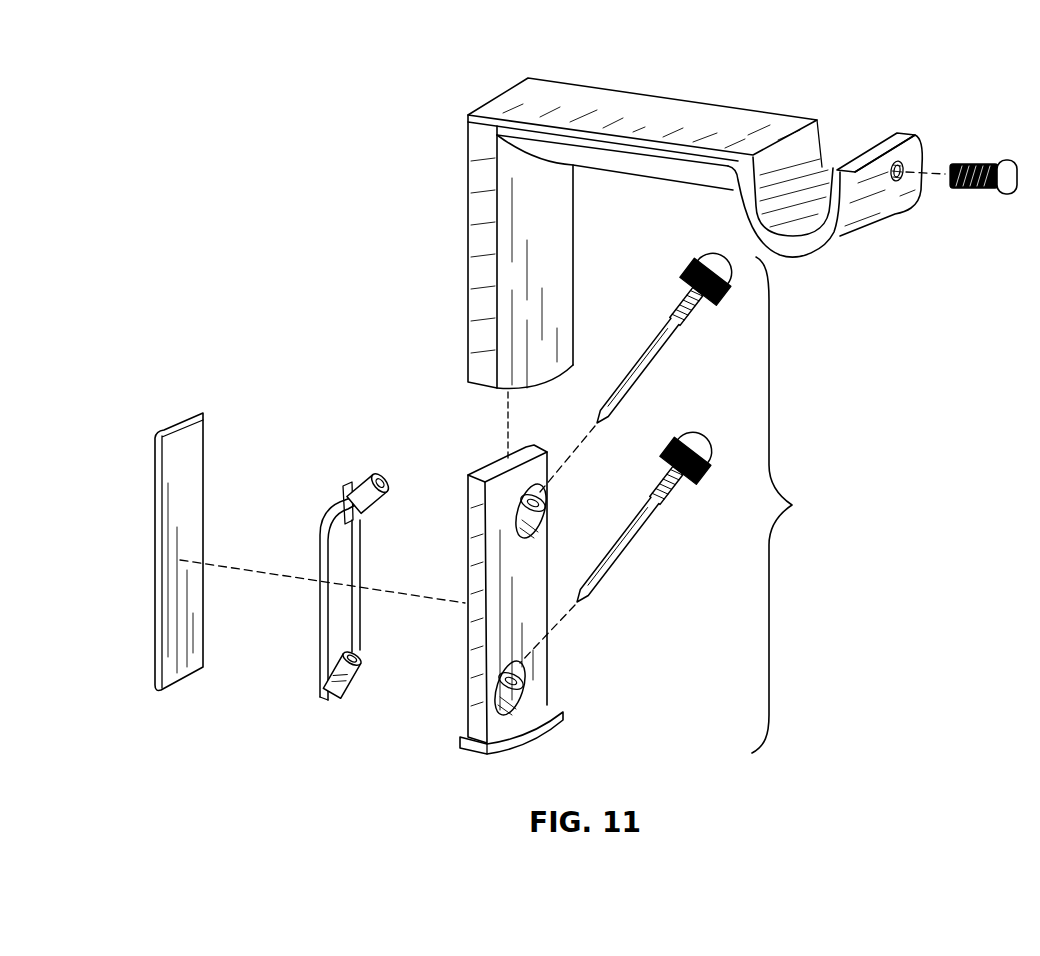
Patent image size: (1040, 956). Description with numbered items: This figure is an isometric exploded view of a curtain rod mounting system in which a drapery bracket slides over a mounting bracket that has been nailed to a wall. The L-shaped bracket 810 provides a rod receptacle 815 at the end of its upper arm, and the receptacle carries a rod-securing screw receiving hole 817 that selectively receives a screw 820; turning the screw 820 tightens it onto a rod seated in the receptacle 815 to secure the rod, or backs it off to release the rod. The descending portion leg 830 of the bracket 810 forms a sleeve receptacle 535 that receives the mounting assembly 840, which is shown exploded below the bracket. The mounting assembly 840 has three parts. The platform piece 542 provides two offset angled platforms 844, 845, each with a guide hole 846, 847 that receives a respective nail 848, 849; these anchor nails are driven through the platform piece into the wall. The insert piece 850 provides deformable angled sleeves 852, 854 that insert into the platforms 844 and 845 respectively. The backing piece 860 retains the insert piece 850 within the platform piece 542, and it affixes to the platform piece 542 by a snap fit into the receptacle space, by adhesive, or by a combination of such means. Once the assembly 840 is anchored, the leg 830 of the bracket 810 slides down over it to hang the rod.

The L-shaped bracket 810 is at (665, 113).
The rod receptacle 815 is at (814, 182).
The rod-securing screw receiving hole 817 is at (905, 176).
The screw 820 is at (980, 163).
The descending portion leg 830 is at (462, 249).
The mounting assembly 840 is at (810, 505).
The angled platform 844 is at (540, 528).
The angled platform 845 is at (524, 706).
The guide hole 846 is at (528, 501).
The guide hole 847 is at (500, 682).
The nail 848 is at (648, 362).
The nail 849 is at (638, 527).
The insert piece 850 is at (328, 513).
The deformable angled sleeve 852 is at (374, 503).
The deformable angled sleeve 854 is at (337, 658).
The backing piece 860 is at (192, 483).
The sleeve receptacle 535 is at (514, 424).
The platform piece 542 is at (468, 716).